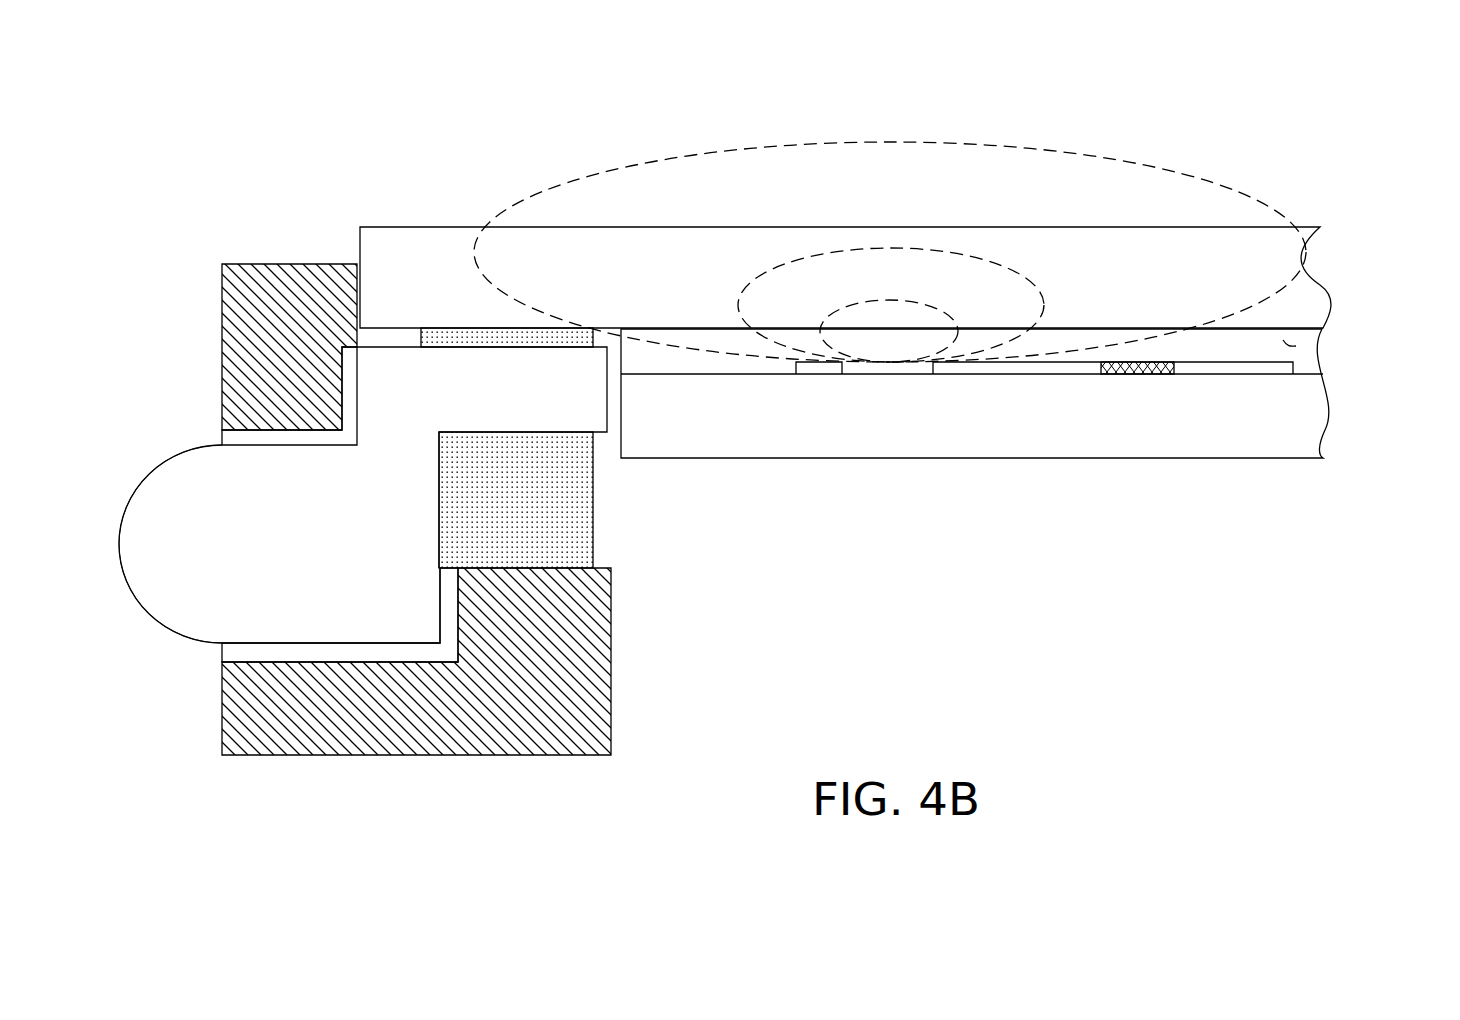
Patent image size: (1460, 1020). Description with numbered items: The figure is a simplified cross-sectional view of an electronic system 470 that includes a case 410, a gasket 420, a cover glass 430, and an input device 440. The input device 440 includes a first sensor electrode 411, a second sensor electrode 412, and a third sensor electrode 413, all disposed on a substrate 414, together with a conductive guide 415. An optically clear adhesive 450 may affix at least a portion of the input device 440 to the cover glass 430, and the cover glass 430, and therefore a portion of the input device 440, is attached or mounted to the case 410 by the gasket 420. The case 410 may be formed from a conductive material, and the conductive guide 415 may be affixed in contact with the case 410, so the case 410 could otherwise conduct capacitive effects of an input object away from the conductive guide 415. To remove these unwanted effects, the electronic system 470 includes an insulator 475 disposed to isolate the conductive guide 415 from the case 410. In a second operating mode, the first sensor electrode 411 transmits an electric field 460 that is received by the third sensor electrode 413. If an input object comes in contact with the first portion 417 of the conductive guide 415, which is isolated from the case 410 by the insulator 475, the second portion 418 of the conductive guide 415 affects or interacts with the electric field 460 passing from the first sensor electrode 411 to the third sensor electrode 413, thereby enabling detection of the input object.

The case 410 is at (222, 347).
The first sensor electrode 411 is at (1296, 368).
The second sensor electrode 412 is at (1138, 377).
The third sensor electrode 413 is at (843, 366).
The substrate 414 is at (1243, 423).
The conductive guide 415 is at (305, 552).
The first portion 417 is at (120, 550).
The second portion 418 is at (607, 392).
The gasket 420 is at (421, 339).
The cover glass 430 is at (1168, 290).
The input device 440 is at (1362, 368).
The optically clear adhesive 450 is at (1288, 348).
The electric field 460 is at (870, 141).
The electronic system 470 is at (1328, 90).
The insulator 475 is at (222, 438).